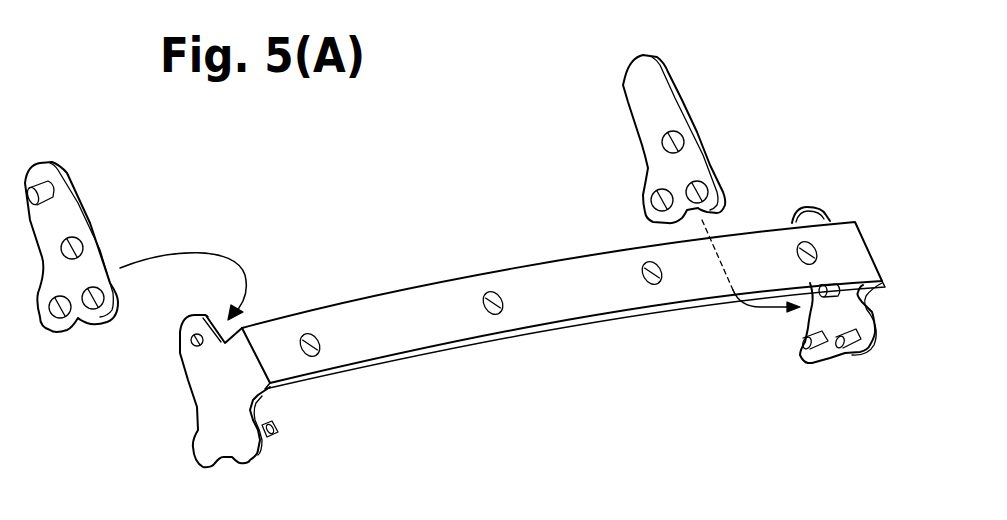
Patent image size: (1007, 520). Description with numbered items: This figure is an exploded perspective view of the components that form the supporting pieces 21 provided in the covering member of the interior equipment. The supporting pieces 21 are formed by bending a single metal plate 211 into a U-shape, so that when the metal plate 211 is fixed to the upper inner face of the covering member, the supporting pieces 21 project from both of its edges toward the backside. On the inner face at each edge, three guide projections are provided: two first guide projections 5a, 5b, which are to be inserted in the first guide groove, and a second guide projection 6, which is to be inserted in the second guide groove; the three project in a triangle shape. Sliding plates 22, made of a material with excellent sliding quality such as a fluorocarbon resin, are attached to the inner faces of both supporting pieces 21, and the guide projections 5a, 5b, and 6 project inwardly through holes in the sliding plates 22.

The metal plate 211 is at (512, 285).
The sliding plate 22 is at (78, 203).
The supporting piece 21 is at (223, 387).
The first guide projection 5a is at (831, 289).
The first guide projection 5b is at (843, 350).
The second guide projection 6 is at (805, 347).